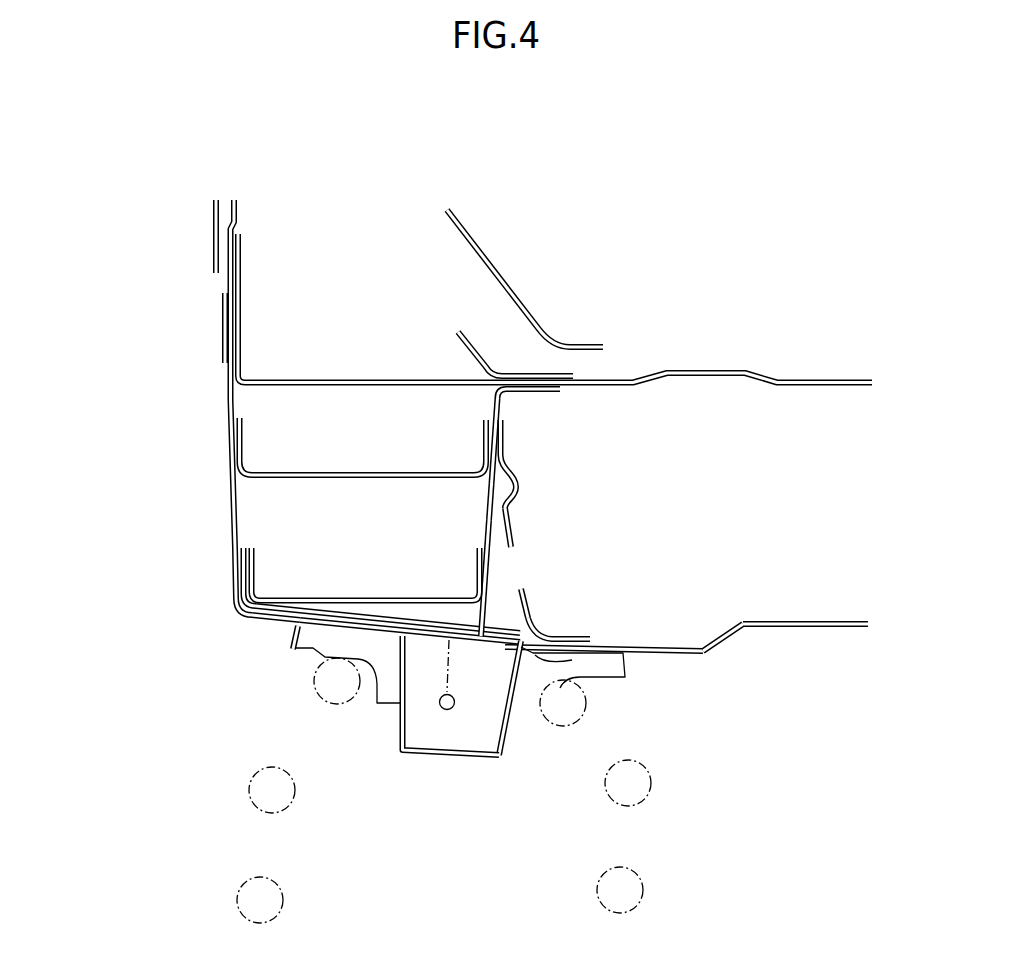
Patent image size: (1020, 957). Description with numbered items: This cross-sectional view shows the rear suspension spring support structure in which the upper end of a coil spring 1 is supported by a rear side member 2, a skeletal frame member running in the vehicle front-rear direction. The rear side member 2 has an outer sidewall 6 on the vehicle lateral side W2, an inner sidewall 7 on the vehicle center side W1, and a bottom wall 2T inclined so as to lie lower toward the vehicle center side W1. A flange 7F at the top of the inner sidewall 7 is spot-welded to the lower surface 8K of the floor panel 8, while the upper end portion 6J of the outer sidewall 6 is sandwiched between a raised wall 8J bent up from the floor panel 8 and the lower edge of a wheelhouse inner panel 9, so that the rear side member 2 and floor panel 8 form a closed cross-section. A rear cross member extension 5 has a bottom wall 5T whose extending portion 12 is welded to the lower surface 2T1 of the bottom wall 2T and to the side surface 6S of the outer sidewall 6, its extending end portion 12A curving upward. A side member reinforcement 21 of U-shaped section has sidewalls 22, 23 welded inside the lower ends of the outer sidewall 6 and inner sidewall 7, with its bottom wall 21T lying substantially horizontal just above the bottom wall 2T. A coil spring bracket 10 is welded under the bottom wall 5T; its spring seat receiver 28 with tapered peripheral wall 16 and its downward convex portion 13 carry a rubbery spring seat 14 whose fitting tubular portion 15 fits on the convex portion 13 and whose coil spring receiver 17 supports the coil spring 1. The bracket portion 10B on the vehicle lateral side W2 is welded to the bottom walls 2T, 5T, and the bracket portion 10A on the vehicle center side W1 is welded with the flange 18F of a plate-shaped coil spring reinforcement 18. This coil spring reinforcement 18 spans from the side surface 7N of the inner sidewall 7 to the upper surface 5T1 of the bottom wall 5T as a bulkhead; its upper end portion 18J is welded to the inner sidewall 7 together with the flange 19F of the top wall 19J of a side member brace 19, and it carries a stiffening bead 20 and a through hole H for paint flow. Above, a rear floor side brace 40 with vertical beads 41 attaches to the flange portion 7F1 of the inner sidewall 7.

The coil spring 1 is at (249, 792).
The rear side member 2 is at (220, 469).
The bottom wall 2T is at (375, 624).
The lower surface 2T1 is at (376, 634).
The rear cross member extension 5 is at (787, 649).
The bottom wall 5T is at (700, 651).
The upper surface 5T1 is at (654, 646).
The outer sidewall 6 is at (229, 500).
The upper end portion 6J is at (232, 340).
The side surface 6S is at (233, 556).
The inner sidewall 7 is at (492, 562).
The flange 7F is at (558, 336).
The flange portion 7F1 is at (540, 385).
The side surface 7N is at (494, 500).
The floor panel 8 is at (828, 379).
The raised wall 8J is at (238, 312).
The lower surface 8K is at (620, 385).
The wheelhouse inner panel 9 is at (226, 330).
The coil spring bracket 10 is at (650, 672).
The coil spring bracket portion 10A is at (582, 664).
The coil spring bracket portion 10B is at (338, 636).
The extending portion 12 is at (240, 616).
The extending end portion 12A is at (241, 571).
The convex portion 13 is at (443, 758).
The spring seat 14 is at (374, 718).
The fitting tubular portion 15 is at (522, 698).
The peripheral wall 16 is at (293, 630).
The coil spring receiver 17 is at (310, 648).
The coil spring reinforcement 18 is at (522, 528).
The flange 18F is at (558, 636).
The upper end portion 18J is at (504, 437).
The side member brace 19 is at (362, 417).
The flange 19F is at (243, 433).
The top wall 19J is at (364, 471).
The bead 20 is at (516, 478).
The side member reinforcement 21 is at (339, 584).
The bottom wall 21T is at (477, 580).
The sidewall 22 is at (253, 562).
The sidewall 23 is at (478, 566).
The spring seat receiver 28 is at (336, 632).
The rear floor side brace 40 is at (438, 311).
The bead 41 is at (478, 240).
The through hole H is at (526, 588).
The vehicle center side W1 is at (870, 214).
The vehicle lateral side W2 is at (58, 214).